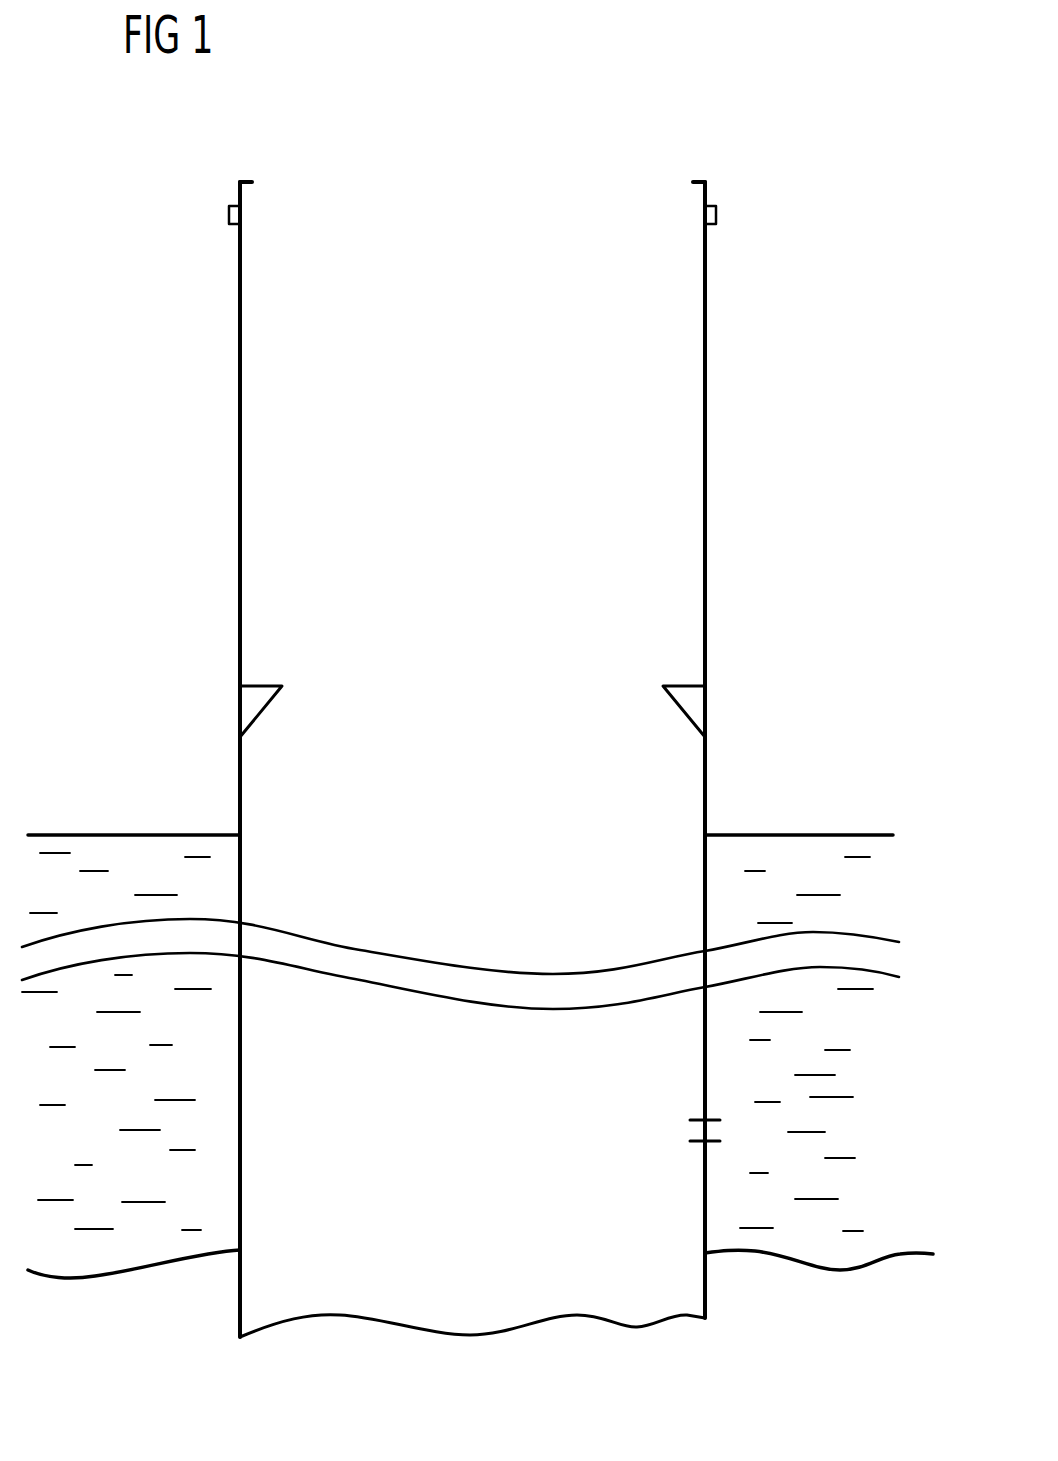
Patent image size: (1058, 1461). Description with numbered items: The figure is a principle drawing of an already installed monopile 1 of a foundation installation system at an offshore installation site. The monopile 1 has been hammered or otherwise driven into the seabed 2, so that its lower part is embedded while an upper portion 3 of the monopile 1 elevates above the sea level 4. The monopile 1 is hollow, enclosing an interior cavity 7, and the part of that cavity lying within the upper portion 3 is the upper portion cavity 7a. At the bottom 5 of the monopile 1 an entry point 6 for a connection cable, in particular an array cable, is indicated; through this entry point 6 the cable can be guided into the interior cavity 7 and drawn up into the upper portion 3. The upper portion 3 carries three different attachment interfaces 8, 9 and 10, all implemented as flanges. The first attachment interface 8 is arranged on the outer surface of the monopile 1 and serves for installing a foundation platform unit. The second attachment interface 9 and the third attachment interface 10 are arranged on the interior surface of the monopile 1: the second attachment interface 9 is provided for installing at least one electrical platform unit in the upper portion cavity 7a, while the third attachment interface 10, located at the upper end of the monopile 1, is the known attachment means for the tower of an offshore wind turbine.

The monopile 1 is at (706, 568).
The seabed 2 is at (893, 1253).
The upper portion 3 is at (461, 119).
The sea level 4 is at (128, 834).
The bottom 5 is at (233, 1211).
The entry point 6 is at (712, 1131).
The interior cavity 7 is at (477, 803).
The upper portion cavity 7a is at (484, 415).
The first attachment interface 8 is at (229, 213).
The second attachment interface 9 is at (254, 703).
The third attachment interface 10 is at (248, 181).